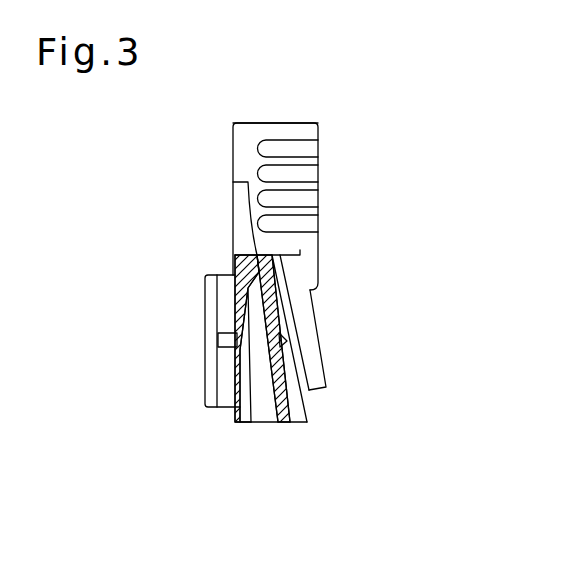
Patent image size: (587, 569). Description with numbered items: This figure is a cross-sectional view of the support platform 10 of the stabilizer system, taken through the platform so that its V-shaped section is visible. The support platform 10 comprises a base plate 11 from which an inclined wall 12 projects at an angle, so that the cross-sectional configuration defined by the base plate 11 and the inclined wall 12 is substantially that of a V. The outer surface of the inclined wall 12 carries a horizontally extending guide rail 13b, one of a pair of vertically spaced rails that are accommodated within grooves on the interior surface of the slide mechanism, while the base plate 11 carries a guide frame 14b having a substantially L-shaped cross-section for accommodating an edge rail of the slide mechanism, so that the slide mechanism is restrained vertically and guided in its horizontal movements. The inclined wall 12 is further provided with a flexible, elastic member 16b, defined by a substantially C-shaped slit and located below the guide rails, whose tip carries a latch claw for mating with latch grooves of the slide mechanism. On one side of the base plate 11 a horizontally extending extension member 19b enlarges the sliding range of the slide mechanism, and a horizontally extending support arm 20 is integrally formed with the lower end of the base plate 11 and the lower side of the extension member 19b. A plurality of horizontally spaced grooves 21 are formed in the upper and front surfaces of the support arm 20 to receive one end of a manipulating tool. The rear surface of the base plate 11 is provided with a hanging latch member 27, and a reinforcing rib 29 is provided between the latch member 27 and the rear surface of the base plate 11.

The support platform 10 is at (262, 434).
The base plate 11 is at (242, 313).
The inclined wall 12 is at (287, 404).
The guide rail 13b is at (278, 312).
The guide frame 14b is at (313, 355).
The elastic member 16b is at (268, 322).
The extension member 19b is at (240, 203).
The support arm 20 is at (240, 147).
The grooves 21 is at (302, 153).
The hanging latch member 27 is at (205, 382).
The reinforcing rib 29 is at (228, 340).